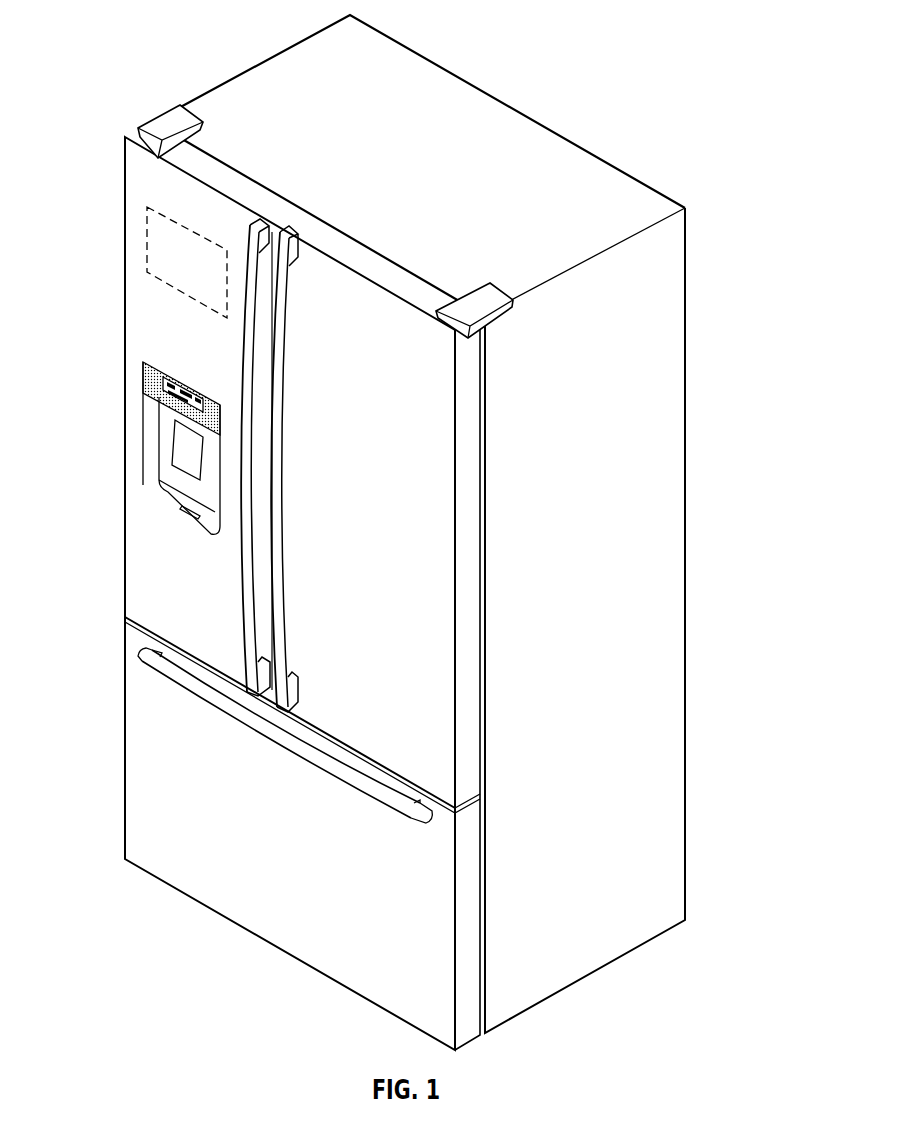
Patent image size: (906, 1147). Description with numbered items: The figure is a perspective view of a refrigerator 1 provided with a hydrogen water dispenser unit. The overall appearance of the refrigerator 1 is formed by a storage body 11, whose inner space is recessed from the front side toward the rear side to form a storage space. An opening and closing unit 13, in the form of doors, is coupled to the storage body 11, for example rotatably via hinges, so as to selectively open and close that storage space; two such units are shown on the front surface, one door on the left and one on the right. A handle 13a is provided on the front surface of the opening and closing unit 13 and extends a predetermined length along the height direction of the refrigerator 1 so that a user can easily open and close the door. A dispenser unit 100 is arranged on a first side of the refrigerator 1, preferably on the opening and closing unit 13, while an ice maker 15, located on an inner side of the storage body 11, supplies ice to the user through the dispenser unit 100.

The refrigerator 1 is at (410, 525).
The storage body 11 is at (655, 433).
The opening and closing unit 13 is at (418, 592).
The handle 13a is at (270, 573).
The ice maker 15 is at (147, 245).
The dispenser unit 100 is at (167, 447).